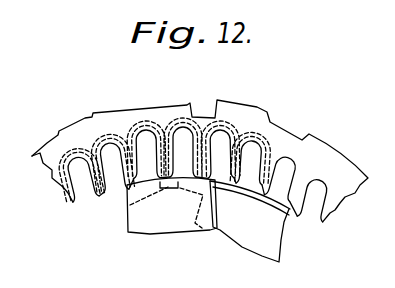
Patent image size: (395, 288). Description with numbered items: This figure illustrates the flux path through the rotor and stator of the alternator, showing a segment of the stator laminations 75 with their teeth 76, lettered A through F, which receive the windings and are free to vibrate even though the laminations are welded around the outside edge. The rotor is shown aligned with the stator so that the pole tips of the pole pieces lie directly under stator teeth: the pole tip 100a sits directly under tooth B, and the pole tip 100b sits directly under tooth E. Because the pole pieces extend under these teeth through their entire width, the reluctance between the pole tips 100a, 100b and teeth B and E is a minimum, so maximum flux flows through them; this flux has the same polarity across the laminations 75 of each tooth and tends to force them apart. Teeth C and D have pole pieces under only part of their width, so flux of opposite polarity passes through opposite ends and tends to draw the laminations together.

The laminations 75 is at (295, 139).
The teeth 76 is at (107, 202).
The pole tip 100a is at (168, 188).
The pole tip 100b is at (251, 202).